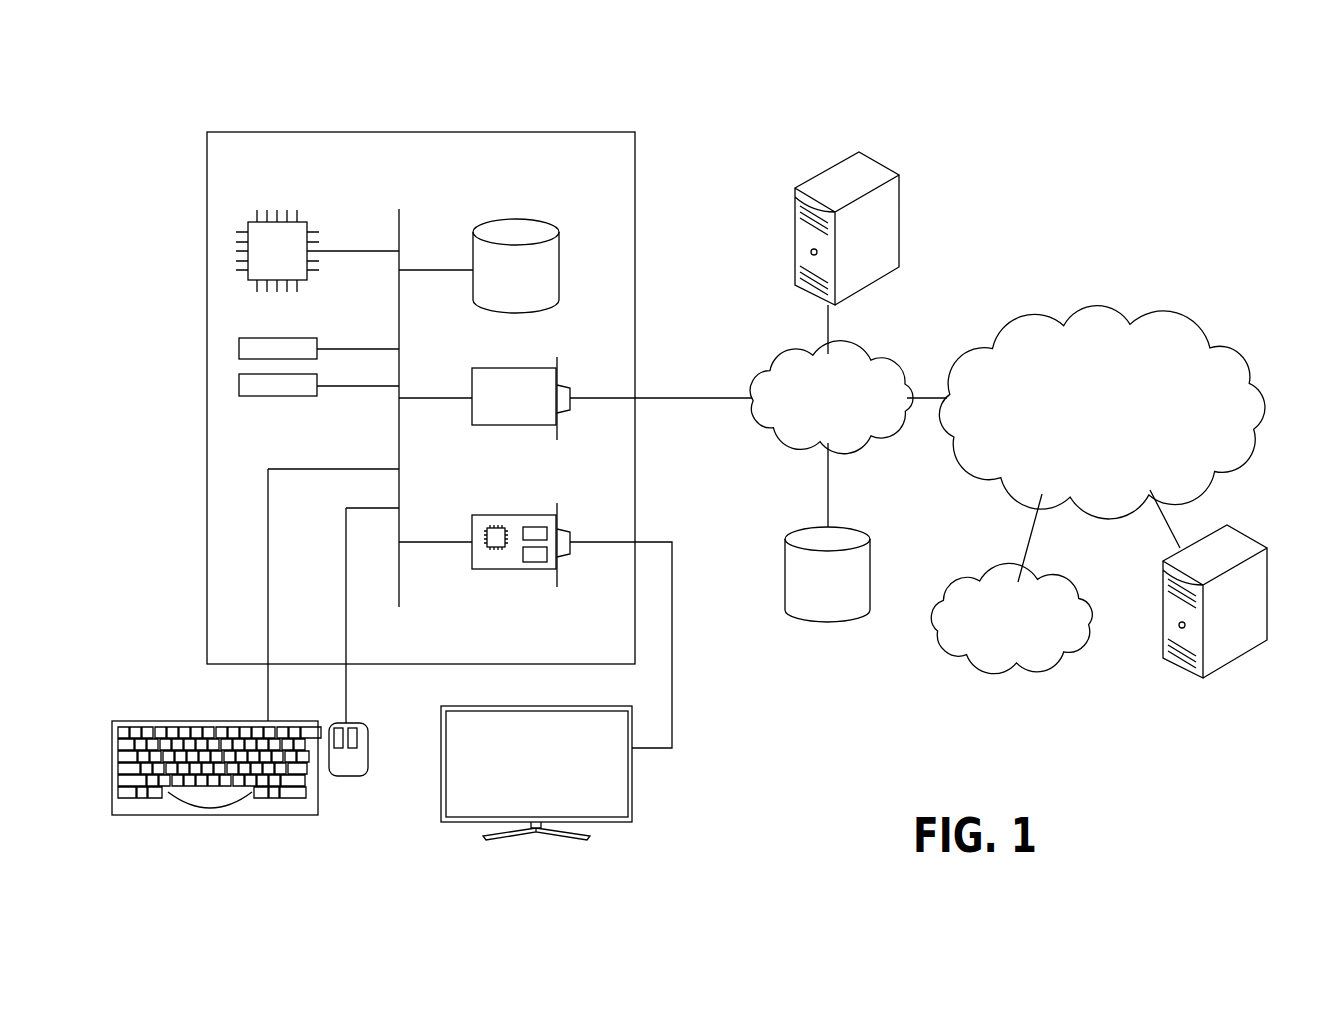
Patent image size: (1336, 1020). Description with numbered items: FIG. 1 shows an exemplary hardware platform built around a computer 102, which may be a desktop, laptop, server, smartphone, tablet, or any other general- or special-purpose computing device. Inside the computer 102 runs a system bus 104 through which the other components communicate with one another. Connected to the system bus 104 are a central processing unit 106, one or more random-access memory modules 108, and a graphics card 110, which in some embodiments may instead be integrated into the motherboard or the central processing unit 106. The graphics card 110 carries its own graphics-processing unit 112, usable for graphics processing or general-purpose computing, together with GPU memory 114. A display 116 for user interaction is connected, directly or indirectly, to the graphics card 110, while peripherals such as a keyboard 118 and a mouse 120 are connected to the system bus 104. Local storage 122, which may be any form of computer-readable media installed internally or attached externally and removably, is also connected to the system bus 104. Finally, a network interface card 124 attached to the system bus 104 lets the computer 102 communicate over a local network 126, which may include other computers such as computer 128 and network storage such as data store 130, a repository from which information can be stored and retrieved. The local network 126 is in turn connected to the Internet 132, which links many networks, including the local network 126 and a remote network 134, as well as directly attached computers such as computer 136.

The computer 102 is at (586, 132).
The system bus 104 is at (402, 222).
The central processing unit 106 is at (302, 218).
The random-access memory modules 108 is at (317, 378).
The graphics card 110 is at (535, 609).
The graphics-processing unit 112 is at (494, 550).
The GPU memory 114 is at (536, 565).
The display 116 is at (634, 803).
The keyboard 118 is at (216, 815).
The mouse 120 is at (347, 776).
The local storage 122 is at (561, 252).
The network interface card 124 is at (470, 380).
The local network 126 is at (884, 352).
The computer 128 is at (880, 163).
The data store 130 is at (860, 531).
The Internet 132 is at (1147, 318).
The remote network 134 is at (1068, 577).
The computer 136 is at (1246, 530).